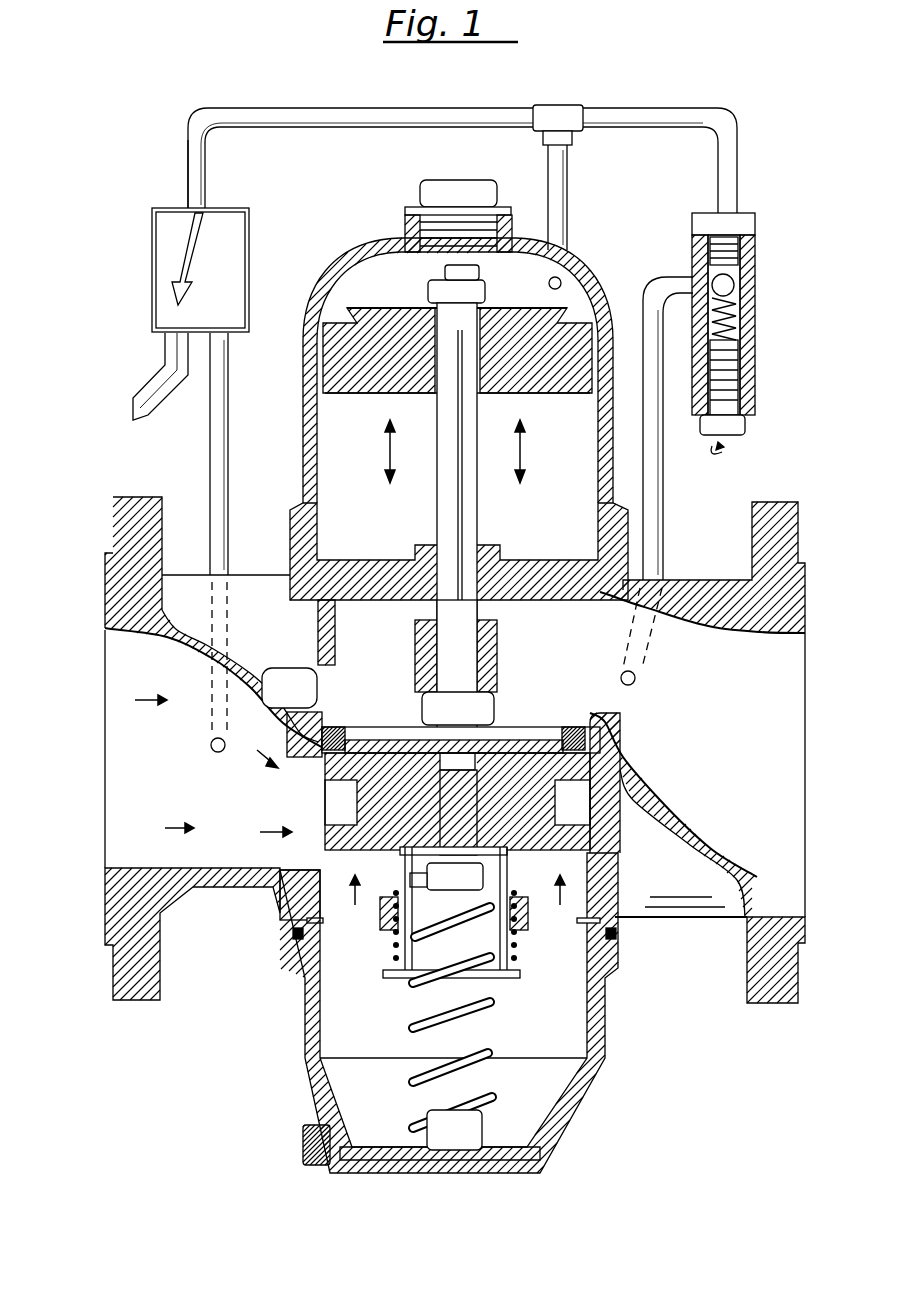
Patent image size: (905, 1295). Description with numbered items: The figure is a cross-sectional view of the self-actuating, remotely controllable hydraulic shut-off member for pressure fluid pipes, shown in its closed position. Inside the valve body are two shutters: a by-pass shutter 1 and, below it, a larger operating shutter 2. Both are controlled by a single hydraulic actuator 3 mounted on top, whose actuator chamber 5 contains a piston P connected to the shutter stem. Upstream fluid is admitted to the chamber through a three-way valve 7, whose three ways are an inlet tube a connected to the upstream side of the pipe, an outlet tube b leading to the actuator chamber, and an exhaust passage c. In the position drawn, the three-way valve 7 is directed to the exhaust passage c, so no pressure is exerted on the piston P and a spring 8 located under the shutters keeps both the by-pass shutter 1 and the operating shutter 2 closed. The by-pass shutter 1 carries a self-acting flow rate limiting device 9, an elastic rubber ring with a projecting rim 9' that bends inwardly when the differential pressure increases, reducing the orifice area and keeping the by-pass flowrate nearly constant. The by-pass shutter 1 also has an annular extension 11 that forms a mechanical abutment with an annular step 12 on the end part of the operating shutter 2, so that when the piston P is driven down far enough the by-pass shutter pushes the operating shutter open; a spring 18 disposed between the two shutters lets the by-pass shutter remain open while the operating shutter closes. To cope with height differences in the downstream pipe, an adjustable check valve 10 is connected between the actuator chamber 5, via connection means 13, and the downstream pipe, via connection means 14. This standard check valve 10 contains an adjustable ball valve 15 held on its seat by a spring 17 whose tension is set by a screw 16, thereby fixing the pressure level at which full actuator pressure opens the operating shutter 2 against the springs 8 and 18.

The by-pass shutter 1 is at (467, 800).
The operating shutter 2 is at (600, 790).
The hydraulic actuator 3 is at (582, 245).
The actuator chamber 5 is at (375, 275).
The three-way valve 7 is at (165, 255).
The spring 8 is at (588, 1030).
The flow rate limiting device 9 is at (661, 783).
The projecting rim 9' is at (532, 900).
The adjustable check valve 10 is at (755, 245).
The annular extension 11 is at (285, 885).
The annular step 12 is at (335, 935).
The connection means 13 is at (565, 165).
The connection means 14 is at (660, 487).
The adjustable ball valve 15 is at (735, 285).
The screw 16 is at (745, 428).
The spring 17 is at (735, 322).
The spring 18 is at (585, 975).
The inlet tube a is at (218, 485).
The outlet tube b is at (195, 180).
The exhaust passage c is at (150, 380).
The piston P is at (613, 367).